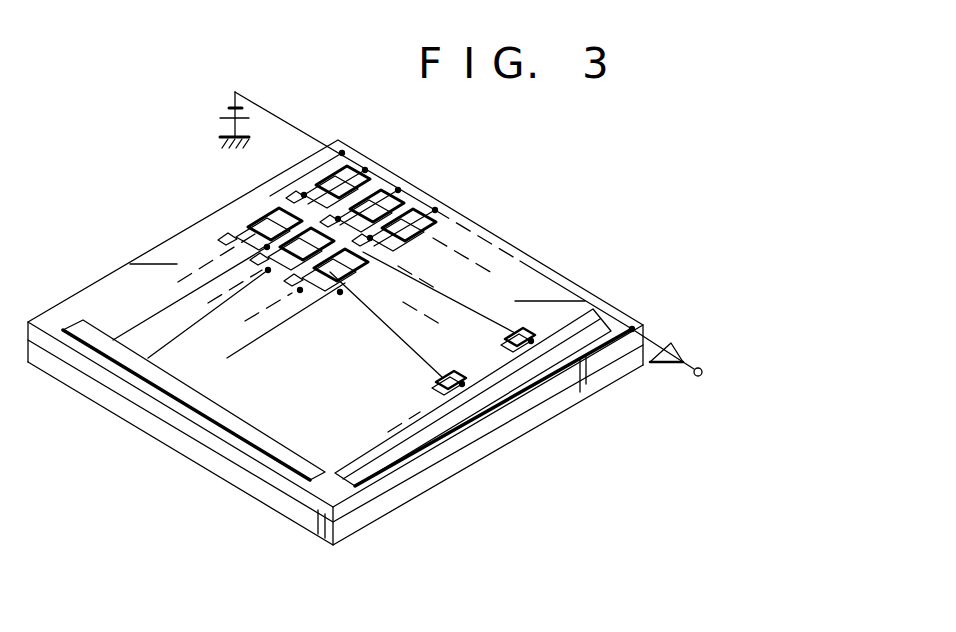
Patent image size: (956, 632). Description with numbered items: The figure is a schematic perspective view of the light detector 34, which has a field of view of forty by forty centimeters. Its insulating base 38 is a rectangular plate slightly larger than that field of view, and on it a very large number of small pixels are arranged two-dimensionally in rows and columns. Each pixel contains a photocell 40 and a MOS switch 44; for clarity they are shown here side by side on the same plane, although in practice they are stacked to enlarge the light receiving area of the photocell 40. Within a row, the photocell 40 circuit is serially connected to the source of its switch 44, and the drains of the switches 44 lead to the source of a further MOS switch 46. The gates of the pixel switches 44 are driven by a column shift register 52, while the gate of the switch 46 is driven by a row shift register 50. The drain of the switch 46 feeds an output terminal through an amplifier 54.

The light detector 34 is at (492, 225).
The insulating base 38 is at (390, 483).
The photocell 40 is at (414, 214).
The MOS switch 44 is at (315, 197).
The MOS switch 46 is at (508, 337).
The row shift register 50 is at (502, 392).
The column shift register 52 is at (167, 383).
The amplifier 54 is at (672, 343).